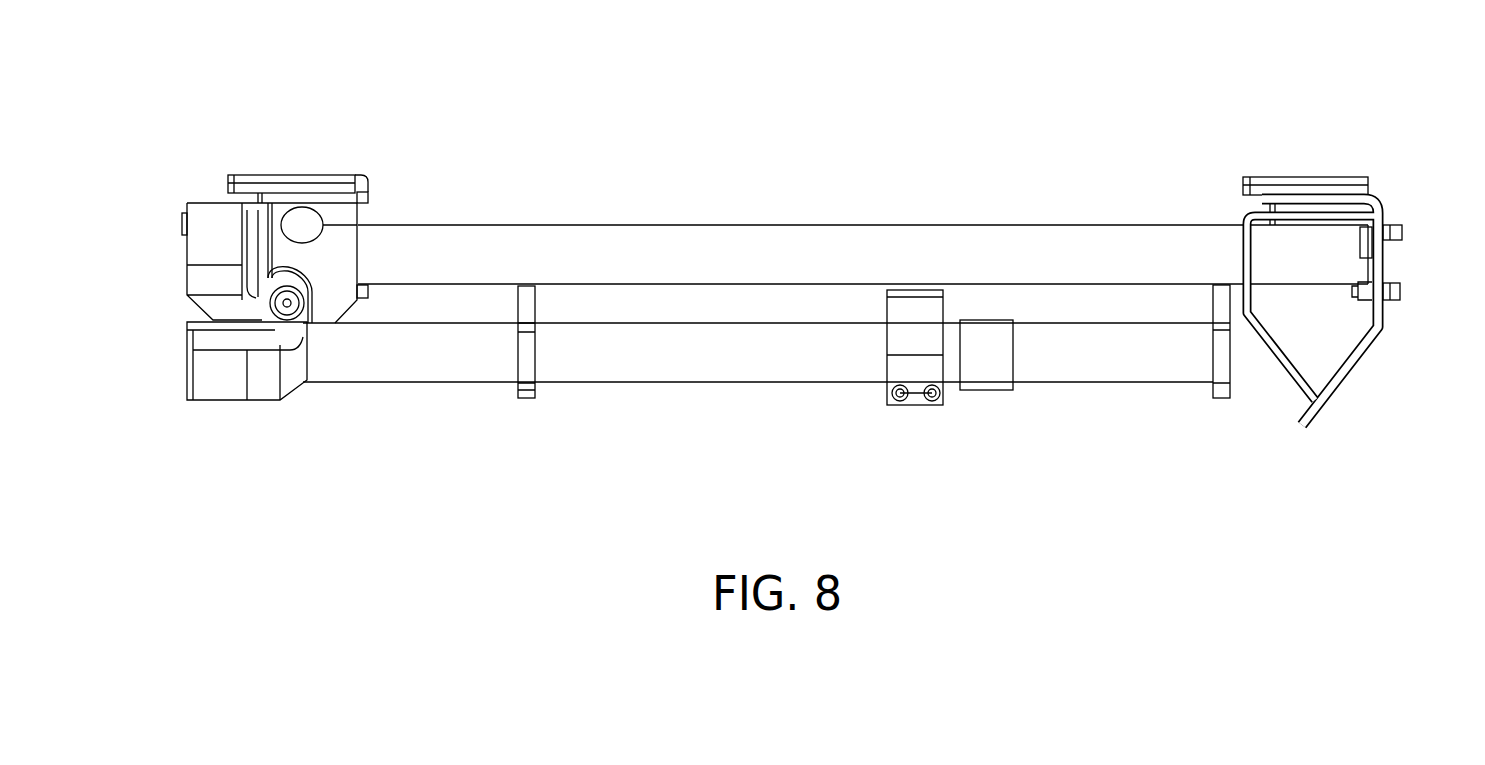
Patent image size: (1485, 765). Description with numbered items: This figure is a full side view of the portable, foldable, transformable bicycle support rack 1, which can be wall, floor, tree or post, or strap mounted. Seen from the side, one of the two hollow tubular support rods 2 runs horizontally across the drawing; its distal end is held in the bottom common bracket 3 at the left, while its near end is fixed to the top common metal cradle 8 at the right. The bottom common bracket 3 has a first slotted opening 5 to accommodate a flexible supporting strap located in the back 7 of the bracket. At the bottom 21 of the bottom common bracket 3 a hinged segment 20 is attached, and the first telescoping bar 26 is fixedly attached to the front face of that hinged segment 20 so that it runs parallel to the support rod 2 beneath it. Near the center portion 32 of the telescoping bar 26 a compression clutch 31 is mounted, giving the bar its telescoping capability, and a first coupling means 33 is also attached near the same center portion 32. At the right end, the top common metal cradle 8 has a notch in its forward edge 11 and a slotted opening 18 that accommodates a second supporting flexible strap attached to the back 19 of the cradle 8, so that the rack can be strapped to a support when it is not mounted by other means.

The bicycle support rack 1 is at (972, 150).
The hollow tubular support rod 2 is at (460, 235).
The bottom common bracket 3 is at (342, 215).
The first slotted opening 5 is at (327, 200).
The back of the bottom common bracket 7 is at (247, 152).
The top common metal cradle 8 is at (1418, 175).
The forward edge 11 is at (1380, 322).
The slotted opening 18 is at (1378, 220).
The back of the top common metal cradle 19 is at (1329, 118).
The hinged segment 20 is at (296, 378).
The bottom of the common bottom bracket 21 is at (160, 245).
The first telescoping bar 26 is at (1070, 367).
The compression clutch 31 is at (981, 378).
The center portion 32 is at (755, 420).
The first coupling means 33 is at (913, 320).